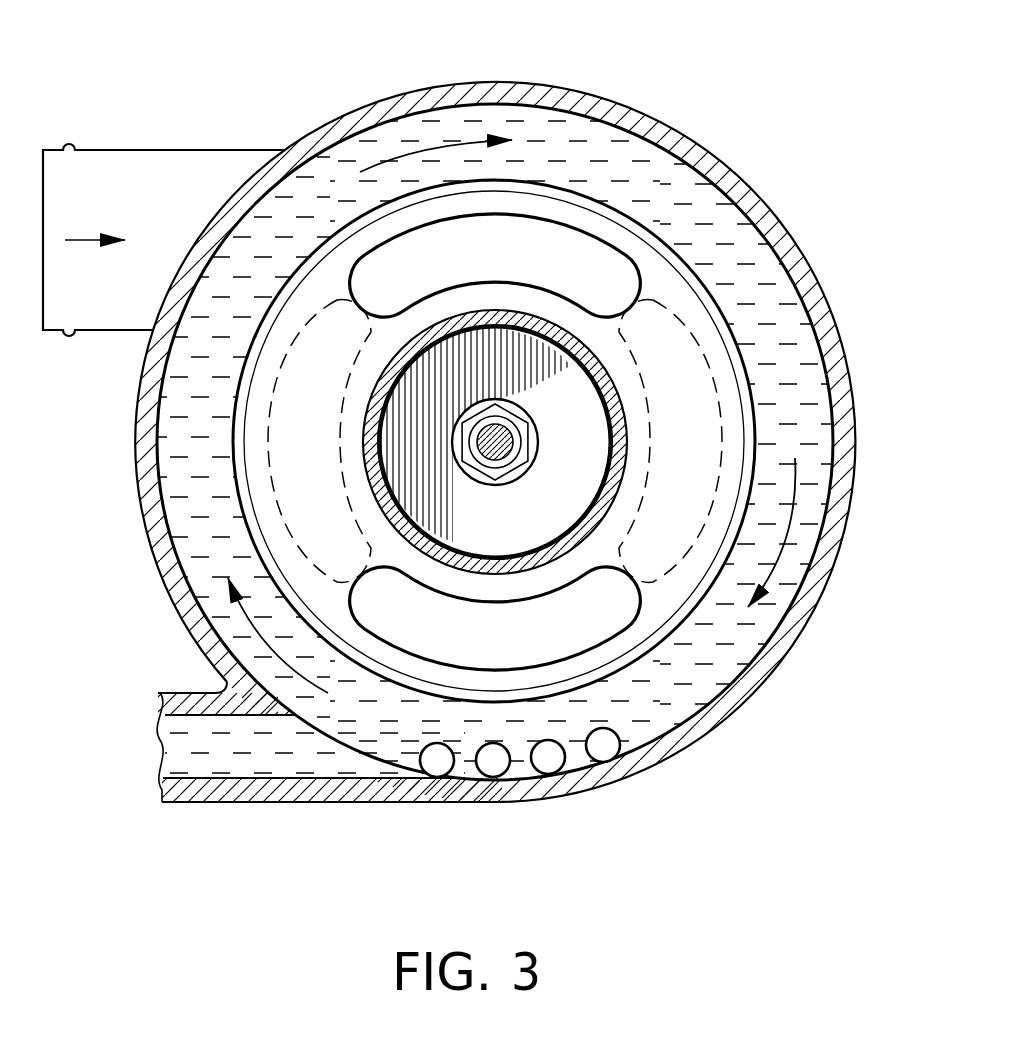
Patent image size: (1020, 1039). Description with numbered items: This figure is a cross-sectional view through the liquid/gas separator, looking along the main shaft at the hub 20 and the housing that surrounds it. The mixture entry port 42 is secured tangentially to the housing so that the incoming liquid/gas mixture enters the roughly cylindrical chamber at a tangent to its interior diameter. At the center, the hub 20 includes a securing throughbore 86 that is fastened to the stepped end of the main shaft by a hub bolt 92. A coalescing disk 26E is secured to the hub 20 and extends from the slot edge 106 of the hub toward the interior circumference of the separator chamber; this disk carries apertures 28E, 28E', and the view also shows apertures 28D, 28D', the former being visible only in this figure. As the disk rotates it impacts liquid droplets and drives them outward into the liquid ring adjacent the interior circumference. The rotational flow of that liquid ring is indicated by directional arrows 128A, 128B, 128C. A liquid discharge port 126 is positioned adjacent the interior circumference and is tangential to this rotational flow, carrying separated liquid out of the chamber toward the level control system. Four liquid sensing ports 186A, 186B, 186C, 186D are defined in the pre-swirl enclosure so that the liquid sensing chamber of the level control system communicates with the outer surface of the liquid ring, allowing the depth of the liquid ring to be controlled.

The mixture entry port 42 is at (130, 190).
The directional arrow 128A is at (450, 144).
The slot edge 106 is at (630, 165).
The coalescing disk 26E is at (665, 275).
The aperture 28D' is at (764, 396).
The aperture 28E is at (495, 265).
The securing throughbore 86 is at (516, 386).
The hub bolt 92 is at (505, 452).
The hub 20 is at (600, 518).
The aperture 28D is at (208, 441).
The directional arrow 128B is at (777, 547).
The aperture 28E' is at (495, 618).
The directional arrow 128C is at (258, 628).
The liquid discharge port 126 is at (262, 746).
The liquid sensing port 186A is at (437, 766).
The liquid sensing port 186B is at (493, 764).
The liquid sensing port 186C is at (548, 762).
The liquid sensing port 186D is at (603, 750).